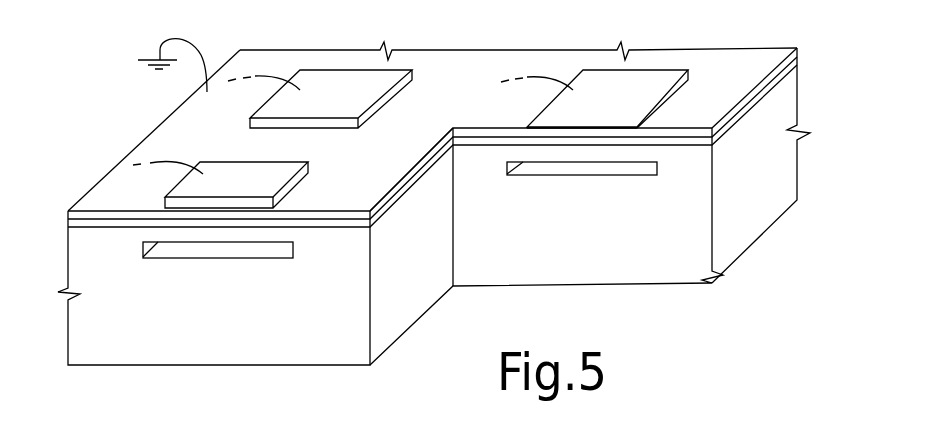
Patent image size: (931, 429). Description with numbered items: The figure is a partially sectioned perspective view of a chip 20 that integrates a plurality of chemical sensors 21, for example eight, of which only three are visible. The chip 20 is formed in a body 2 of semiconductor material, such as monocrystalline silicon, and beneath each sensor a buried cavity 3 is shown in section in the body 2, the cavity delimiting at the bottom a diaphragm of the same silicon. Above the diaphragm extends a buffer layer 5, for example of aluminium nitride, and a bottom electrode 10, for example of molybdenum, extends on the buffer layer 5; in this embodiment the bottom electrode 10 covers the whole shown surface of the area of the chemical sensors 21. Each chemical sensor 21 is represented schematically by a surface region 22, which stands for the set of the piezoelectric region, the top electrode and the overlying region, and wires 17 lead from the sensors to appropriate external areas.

The body 2 is at (132, 343).
The buried cavity 3 is at (238, 253).
The buffer layer 5 is at (385, 212).
The bottom electrode 10 is at (415, 168).
The wire 17 is at (182, 160).
The chip 20 is at (119, 99).
The chemical sensor 21 is at (402, 106).
The surface region 22 is at (248, 193).